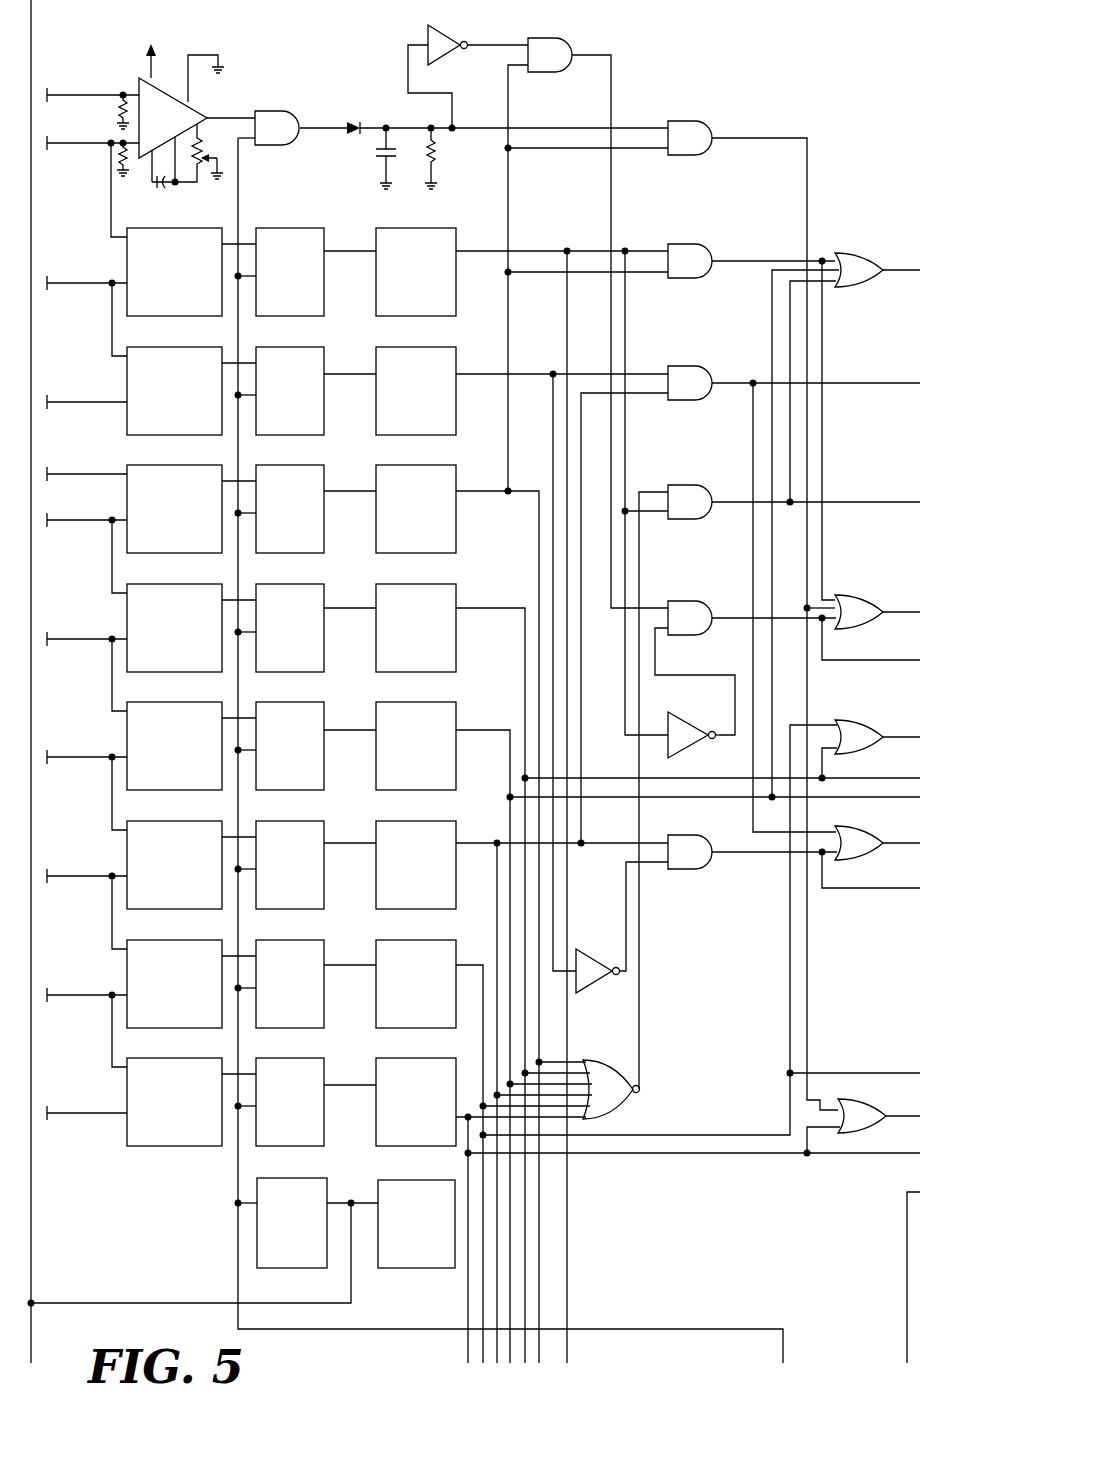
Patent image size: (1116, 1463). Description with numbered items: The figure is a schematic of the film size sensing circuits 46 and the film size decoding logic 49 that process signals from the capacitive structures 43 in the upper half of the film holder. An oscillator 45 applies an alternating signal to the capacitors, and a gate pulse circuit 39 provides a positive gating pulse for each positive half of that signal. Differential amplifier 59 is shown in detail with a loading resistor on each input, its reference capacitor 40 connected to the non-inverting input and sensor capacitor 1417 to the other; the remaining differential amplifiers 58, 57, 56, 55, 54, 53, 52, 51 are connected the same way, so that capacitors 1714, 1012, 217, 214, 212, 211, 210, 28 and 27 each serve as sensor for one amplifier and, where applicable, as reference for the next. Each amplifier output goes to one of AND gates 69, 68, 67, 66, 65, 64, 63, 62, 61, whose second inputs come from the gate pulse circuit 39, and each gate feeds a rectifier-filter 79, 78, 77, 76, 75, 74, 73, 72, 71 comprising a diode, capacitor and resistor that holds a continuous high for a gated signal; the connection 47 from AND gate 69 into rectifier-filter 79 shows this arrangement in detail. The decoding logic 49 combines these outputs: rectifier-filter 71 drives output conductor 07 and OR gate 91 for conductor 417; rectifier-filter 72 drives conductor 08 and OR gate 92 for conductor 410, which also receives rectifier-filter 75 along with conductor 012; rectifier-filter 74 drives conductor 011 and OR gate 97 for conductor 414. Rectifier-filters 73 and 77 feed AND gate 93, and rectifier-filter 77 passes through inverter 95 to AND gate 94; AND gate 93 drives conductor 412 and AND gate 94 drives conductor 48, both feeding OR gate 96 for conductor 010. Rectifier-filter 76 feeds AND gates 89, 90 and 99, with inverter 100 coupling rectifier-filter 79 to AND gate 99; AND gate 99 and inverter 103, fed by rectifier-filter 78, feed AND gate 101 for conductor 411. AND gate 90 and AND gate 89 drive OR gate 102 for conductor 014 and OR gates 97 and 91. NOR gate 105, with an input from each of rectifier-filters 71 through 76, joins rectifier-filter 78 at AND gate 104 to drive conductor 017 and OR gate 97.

The capacitive structures 43 is at (35, 76).
The reference capacitor 40 is at (44, 92).
The film size sensing circuits 46 is at (122, 74).
The bus line 47 is at (324, 108).
The differential amplifier 59 is at (200, 110).
The AND gate 69 is at (281, 110).
The rectifier-filter circuit 79 is at (373, 148).
The capacitor 1417 is at (40, 156).
The capacitor 1714 is at (42, 282).
The sensor capacitor 1012 is at (42, 401).
The reference capacitor 217 is at (44, 478).
The capacitor 214 is at (44, 524).
The capacitor 212 is at (44, 642).
The capacitor 211 is at (44, 762).
The capacitor 210 is at (44, 879).
The capacitor 28 is at (44, 997).
The sensor capacitor 27 is at (44, 1117).
The differential amplifier 58 is at (188, 230).
The differential amplifier 57 is at (188, 350).
The differential amplifier 56 is at (188, 468).
The differential amplifier 55 is at (188, 587).
The differential amplifier 54 is at (188, 705).
The differential amplifier 53 is at (188, 824).
The differential amplifier 52 is at (188, 943).
The differential amplifier 51 is at (188, 1061).
The AND gate 68 is at (293, 230).
The AND gate 67 is at (295, 350).
The AND gate 66 is at (293, 468).
The AND gate 65 is at (293, 587).
The AND gate 64 is at (293, 705).
The AND gate 63 is at (293, 824).
The AND gate 62 is at (293, 943).
The AND gate 61 is at (293, 1061).
The rectifier-filter circuit 78 is at (433, 230).
The rectifier-filter circuit 77 is at (433, 350).
The rectifier-filter circuit 76 is at (433, 468).
The rectifier-filter circuit 75 is at (433, 587).
The rectifier-filter circuit 74 is at (433, 705).
The rectifier-filter circuit 73 is at (433, 824).
The rectifier-filter circuit 72 is at (433, 943).
The rectifier-filter circuit 71 is at (433, 1061).
The gate pulse circuit 39 is at (323, 1184).
The oscillator 45 is at (404, 1280).
The inverter 100 is at (452, 38).
The AND gate 99 is at (560, 40).
The film size decoding logic 49 is at (632, 102).
The AND gate 89 is at (701, 118).
The AND gate 90 is at (709, 246).
The AND gate 93 is at (709, 366).
The AND gate 104 is at (700, 484).
The AND gate 101 is at (693, 600).
The inverter 103 is at (692, 716).
The AND gate 94 is at (712, 872).
The inverter 95 is at (592, 958).
The NOR gate 105 is at (606, 1070).
The OR gate 97 is at (855, 256).
The output conductor 414 is at (887, 268).
The output conductor 412 is at (870, 382).
The output conductor 017 is at (870, 500).
The OR gate 102 is at (850, 594).
The output conductor 014 is at (890, 610).
The output conductor 411 is at (876, 660).
The OR gate 92 is at (856, 720).
The output conductor 410 is at (885, 734).
The output conductor 012 is at (888, 772).
The output conductor 011 is at (856, 800).
The OR gate 96 is at (860, 838).
The output conductor 010 is at (894, 856).
The output conductor 48 is at (860, 894).
The output conductor 08 is at (890, 1072).
The OR gate 91 is at (852, 1104).
The output conductor 417 is at (893, 1118).
The output conductor 07 is at (890, 1158).